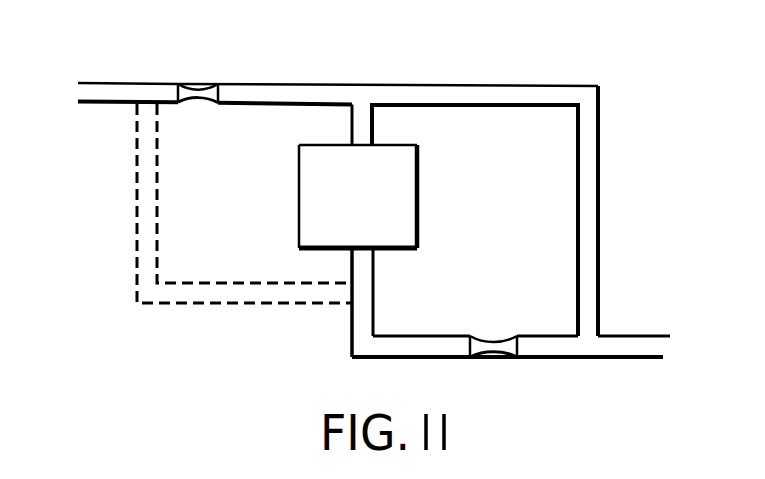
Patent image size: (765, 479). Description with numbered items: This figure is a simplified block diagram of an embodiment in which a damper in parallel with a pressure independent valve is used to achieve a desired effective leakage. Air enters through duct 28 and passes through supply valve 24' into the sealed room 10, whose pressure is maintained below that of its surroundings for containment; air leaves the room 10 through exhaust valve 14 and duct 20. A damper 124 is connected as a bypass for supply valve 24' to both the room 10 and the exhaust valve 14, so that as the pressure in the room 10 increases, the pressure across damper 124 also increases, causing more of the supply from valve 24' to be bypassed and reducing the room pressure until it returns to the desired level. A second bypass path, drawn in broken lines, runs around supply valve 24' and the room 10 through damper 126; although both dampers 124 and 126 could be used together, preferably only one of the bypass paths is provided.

The duct 28 is at (110, 83).
The supply valve 24' is at (194, 66).
The damper 124 is at (476, 103).
The sealed room 10 is at (417, 182).
The damper 126 is at (153, 199).
The exhaust valve 14 is at (488, 337).
The duct 20 is at (637, 340).